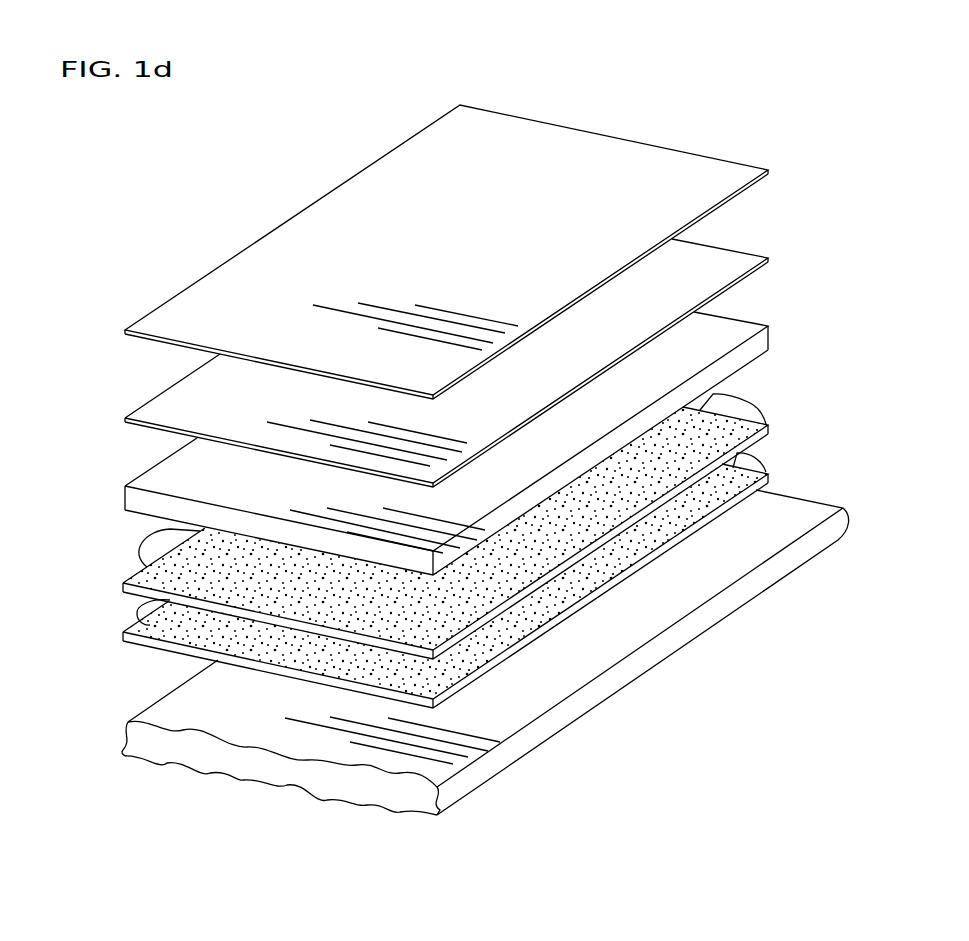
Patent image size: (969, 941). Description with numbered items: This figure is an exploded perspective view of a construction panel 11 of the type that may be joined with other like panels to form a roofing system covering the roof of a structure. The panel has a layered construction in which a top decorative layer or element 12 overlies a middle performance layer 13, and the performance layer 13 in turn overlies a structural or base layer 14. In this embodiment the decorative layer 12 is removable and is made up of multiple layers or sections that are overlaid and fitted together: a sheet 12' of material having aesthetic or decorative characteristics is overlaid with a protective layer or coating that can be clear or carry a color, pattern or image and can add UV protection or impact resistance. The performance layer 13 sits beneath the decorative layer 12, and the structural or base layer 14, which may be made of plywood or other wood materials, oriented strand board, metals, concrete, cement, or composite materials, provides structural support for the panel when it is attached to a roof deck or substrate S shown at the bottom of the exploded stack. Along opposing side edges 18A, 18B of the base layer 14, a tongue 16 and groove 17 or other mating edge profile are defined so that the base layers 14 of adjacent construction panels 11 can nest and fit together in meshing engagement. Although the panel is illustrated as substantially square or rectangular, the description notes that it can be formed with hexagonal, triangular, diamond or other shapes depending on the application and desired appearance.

The construction panel 11 is at (457, 416).
The decorative layer 12 is at (493, 286).
The sheet 12' is at (460, 347).
The performance layer 13 is at (718, 343).
The structural or base layer 14 is at (474, 504).
The tongue 16 is at (448, 537).
The groove 17 is at (410, 589).
The side edge 18A is at (737, 397).
The side edge 18B is at (165, 609).
The substrate S is at (768, 528).